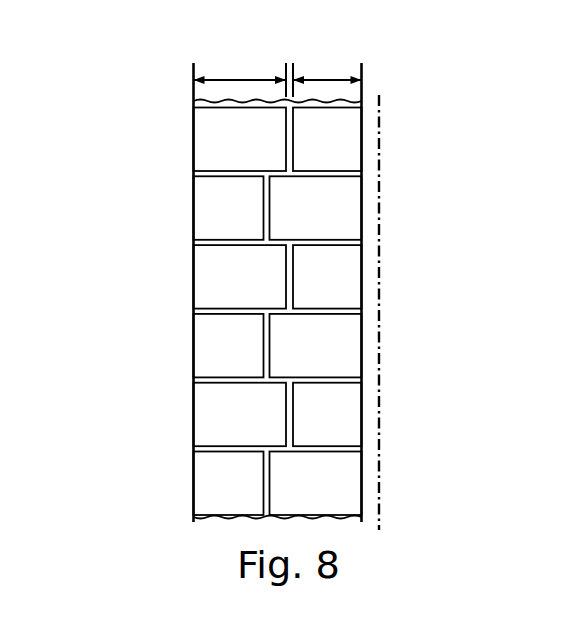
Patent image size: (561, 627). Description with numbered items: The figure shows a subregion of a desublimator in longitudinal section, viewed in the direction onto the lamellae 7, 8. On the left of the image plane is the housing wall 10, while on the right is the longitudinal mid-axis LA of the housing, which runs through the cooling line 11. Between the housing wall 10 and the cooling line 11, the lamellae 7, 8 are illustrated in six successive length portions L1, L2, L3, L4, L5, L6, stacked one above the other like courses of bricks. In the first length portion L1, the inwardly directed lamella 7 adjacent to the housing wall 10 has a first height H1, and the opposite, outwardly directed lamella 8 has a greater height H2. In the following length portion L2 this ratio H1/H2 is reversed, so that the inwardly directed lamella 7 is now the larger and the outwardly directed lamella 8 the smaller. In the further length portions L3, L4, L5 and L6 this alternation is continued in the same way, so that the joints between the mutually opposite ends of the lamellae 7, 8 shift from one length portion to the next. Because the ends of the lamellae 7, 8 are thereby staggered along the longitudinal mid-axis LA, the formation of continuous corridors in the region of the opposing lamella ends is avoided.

The inwardly directed lamella 7 is at (225, 119).
The outwardly directed lamella 8 is at (340, 130).
The housing wall 10 is at (193, 132).
The cooling line 11 is at (363, 327).
The longitudinal mid-axis LA is at (379, 250).
The first height H1 is at (240, 72).
The second height H2 is at (327, 72).
The first length portion L1 is at (245, 140).
The second length portion L2 is at (246, 212).
The third length portion L3 is at (246, 277).
The fourth length portion L4 is at (246, 346).
The fifth length portion L5 is at (246, 415).
The sixth length portion L6 is at (246, 484).